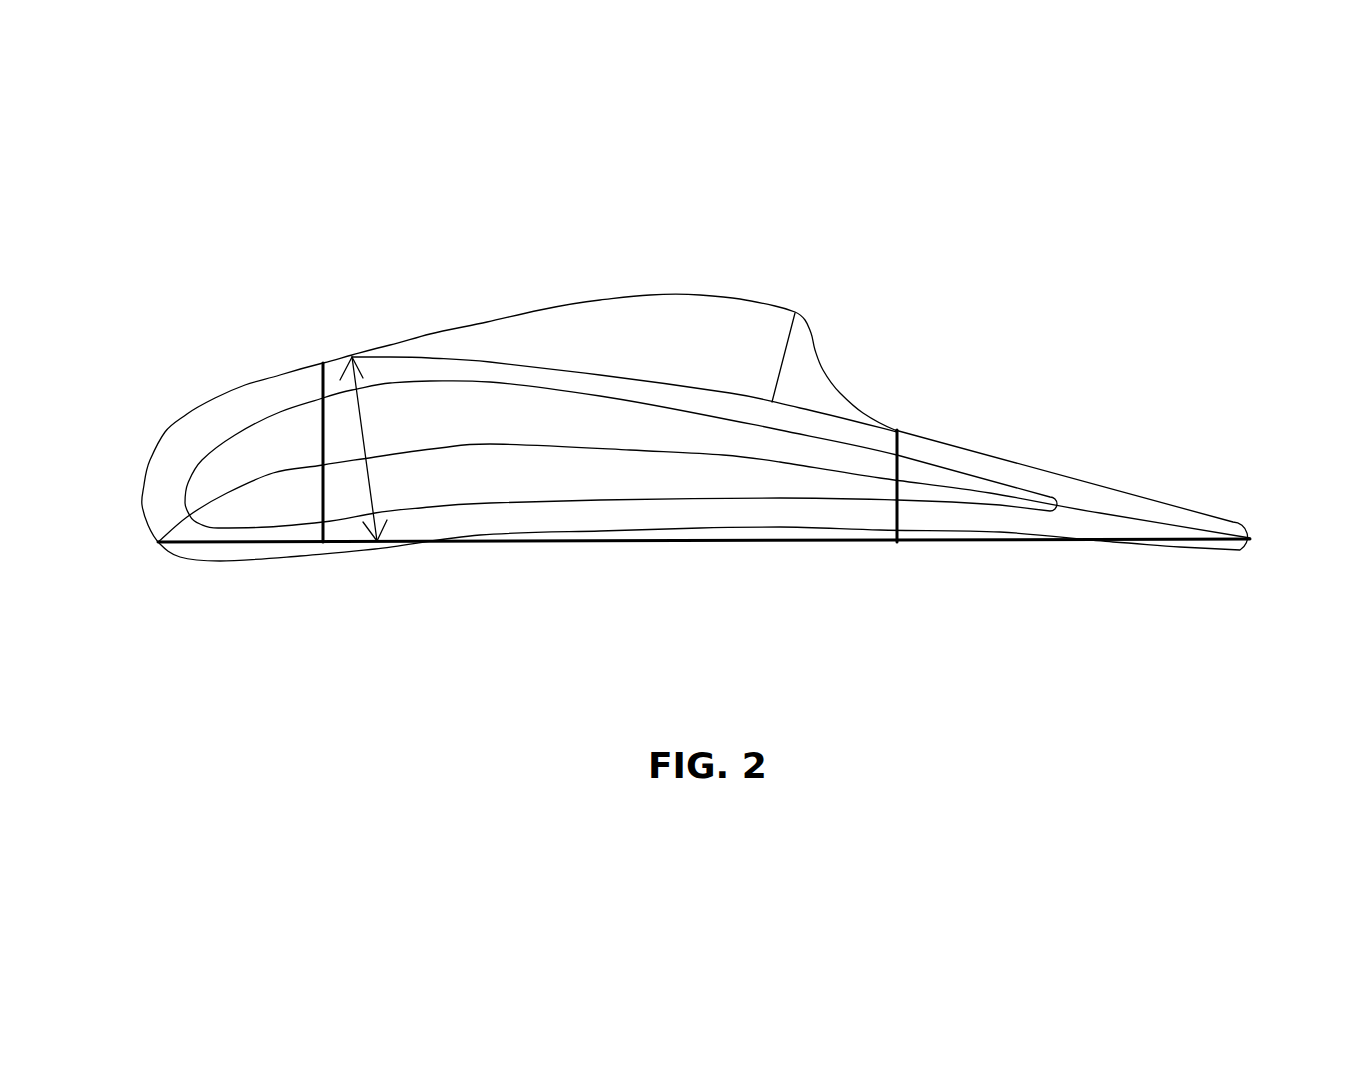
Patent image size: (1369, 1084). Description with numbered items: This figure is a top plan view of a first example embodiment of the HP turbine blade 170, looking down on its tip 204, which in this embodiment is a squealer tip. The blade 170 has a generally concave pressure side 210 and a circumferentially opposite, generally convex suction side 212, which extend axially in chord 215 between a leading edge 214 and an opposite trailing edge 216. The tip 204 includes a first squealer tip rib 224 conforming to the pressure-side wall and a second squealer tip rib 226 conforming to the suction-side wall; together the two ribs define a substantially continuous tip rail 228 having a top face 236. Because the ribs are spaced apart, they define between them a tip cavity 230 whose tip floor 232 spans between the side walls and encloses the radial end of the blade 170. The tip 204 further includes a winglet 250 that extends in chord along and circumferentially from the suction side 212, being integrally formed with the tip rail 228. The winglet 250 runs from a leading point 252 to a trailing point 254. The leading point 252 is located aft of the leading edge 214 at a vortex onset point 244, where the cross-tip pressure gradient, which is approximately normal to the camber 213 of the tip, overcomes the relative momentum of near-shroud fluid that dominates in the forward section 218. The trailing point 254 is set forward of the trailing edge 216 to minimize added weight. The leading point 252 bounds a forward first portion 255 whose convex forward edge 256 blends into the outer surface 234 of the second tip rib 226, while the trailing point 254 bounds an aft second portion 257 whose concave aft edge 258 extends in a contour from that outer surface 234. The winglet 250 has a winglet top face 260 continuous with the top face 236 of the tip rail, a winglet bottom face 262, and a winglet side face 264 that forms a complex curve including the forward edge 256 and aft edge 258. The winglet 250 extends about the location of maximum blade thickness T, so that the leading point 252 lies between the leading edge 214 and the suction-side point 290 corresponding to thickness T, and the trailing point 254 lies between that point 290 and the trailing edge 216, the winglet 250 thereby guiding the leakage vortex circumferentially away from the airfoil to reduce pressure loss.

The HP turbine blade 170 is at (1135, 352).
The tip 204 is at (1232, 508).
The pressure side 210 is at (300, 557).
The suction side 212 is at (1013, 455).
The camber 213 is at (322, 493).
The leading edge 214 is at (158, 542).
The chord 215 is at (975, 545).
The trailing edge 216 is at (1253, 537).
The forward section 218 is at (147, 460).
The first squealer tip rib 224 is at (790, 520).
The second squealer tip rib 226 is at (1038, 480).
The tip rail 228 is at (210, 548).
The tip cavity 230 is at (440, 487).
The tip floor 232 is at (573, 485).
The outer surface 234 is at (215, 400).
The top face 236 is at (185, 461).
The vortex onset point 244 is at (323, 362).
The winglet 250 is at (677, 313).
The leading point 252 is at (337, 380).
The trailing point 254 is at (887, 432).
The forward first portion 255 is at (487, 338).
The forward edge 256 is at (452, 327).
The aft second portion 257 is at (805, 385).
The aft edge 258 is at (815, 347).
The winglet top face 260 is at (628, 352).
The winglet bottom face 262 is at (752, 360).
The winglet side face 264 is at (738, 292).
The suction-side point 290 is at (352, 354).
The maximum blade thickness T is at (372, 482).